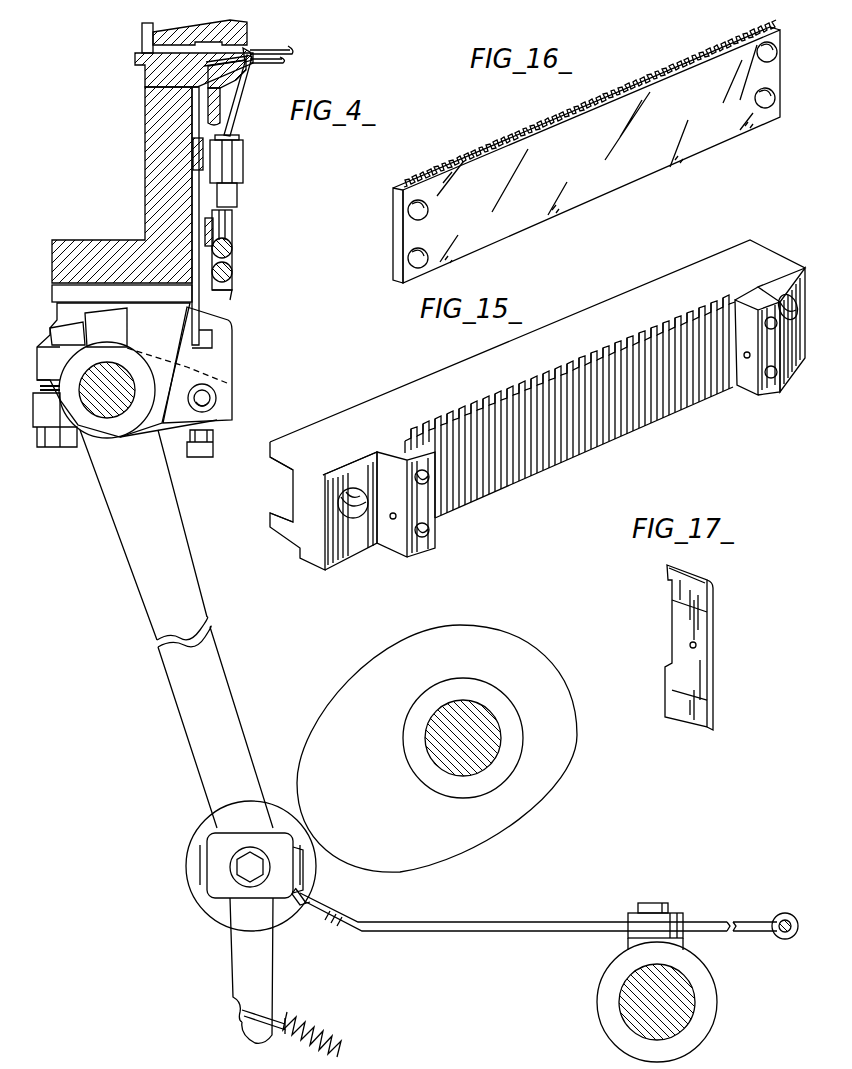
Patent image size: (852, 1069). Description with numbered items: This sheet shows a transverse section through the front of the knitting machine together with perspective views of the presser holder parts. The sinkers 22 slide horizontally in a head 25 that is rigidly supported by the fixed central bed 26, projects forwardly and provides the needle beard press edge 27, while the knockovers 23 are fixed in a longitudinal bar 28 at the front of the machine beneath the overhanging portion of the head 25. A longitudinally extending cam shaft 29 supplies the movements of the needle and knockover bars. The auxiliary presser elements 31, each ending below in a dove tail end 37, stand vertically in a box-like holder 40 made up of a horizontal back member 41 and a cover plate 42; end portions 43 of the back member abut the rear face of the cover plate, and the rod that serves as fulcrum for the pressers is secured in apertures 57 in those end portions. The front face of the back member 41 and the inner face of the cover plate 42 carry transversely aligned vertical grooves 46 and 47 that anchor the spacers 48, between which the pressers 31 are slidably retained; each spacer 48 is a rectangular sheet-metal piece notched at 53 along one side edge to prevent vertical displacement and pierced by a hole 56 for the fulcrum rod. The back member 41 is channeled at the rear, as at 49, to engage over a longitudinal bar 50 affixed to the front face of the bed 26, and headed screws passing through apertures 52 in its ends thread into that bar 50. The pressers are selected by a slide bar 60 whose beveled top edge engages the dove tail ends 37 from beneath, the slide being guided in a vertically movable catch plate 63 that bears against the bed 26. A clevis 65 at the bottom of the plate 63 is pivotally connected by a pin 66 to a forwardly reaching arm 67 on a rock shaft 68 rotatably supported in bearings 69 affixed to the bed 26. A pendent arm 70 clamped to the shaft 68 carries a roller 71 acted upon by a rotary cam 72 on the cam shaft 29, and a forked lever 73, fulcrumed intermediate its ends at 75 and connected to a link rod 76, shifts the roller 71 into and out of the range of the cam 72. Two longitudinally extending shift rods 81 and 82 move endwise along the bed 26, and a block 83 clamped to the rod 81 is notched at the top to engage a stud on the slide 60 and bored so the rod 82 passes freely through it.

In FIG. 4, the sinkers 22 is at (288, 50).
In FIG. 4, the knockovers 23 is at (270, 62).
In FIG. 4, the head 25 is at (145, 77).
In FIG. 4, the bed 26 is at (145, 110).
In FIG. 4, the needle beard press edge 27 is at (250, 52).
In FIG. 4, the knockover bar 28 is at (238, 86).
In FIG. 4, the cam shaft 29 is at (462, 700).
In FIG. 4, the auxiliary presser elements 31 is at (236, 112).
In FIG. 4, the dove tail end 37 is at (232, 217).
In FIG. 4, the holder 40 is at (250, 137).
In FIG. 15, the back member 41 is at (385, 402).
In FIG. 16, the cover plate 42 is at (394, 240).
In FIG. 15, the end portions 43 is at (420, 548).
In FIG. 15, the vertical grooves 46 is at (627, 432).
In FIG. 16, the vertical grooves 47 is at (495, 145).
In FIG. 4, the spacers 48 is at (237, 193).
In FIG. 17, the spacers 48 is at (723, 640).
In FIG. 15, the channel 49 is at (278, 482).
In FIG. 4, the longitudinal bar 50 is at (193, 155).
In FIG. 15, the apertures 52 is at (360, 518).
In FIG. 17, the notch 53 is at (668, 608).
In FIG. 17, the holes 56 is at (690, 645).
In FIG. 15, the apertures 57 is at (393, 513).
In FIG. 4, the slide bar 60 is at (213, 232).
In FIG. 4, the catch member plate 63 is at (208, 313).
In FIG. 4, the clevis 65 is at (232, 342).
In FIG. 4, the pin 66 is at (216, 399).
In FIG. 4, the forwardly reaching arm 67 is at (152, 430).
In FIG. 4, the rock shaft 68 is at (118, 376).
In FIG. 4, the bearings 69 is at (60, 317).
In FIG. 4, the pendent arm 70 is at (210, 640).
In FIG. 4, the roller 71 is at (200, 830).
In FIG. 4, the rotary cam 72 is at (437, 748).
In FIG. 4, the forked lever 73 is at (469, 921).
In FIG. 4, the fulcrum 75 is at (656, 904).
In FIG. 4, the link rod 76 is at (786, 913).
In FIG. 4, the shift rod 81 is at (232, 252).
In FIG. 4, the shift rod 82 is at (232, 274).
In FIG. 4, the block 83 is at (230, 292).